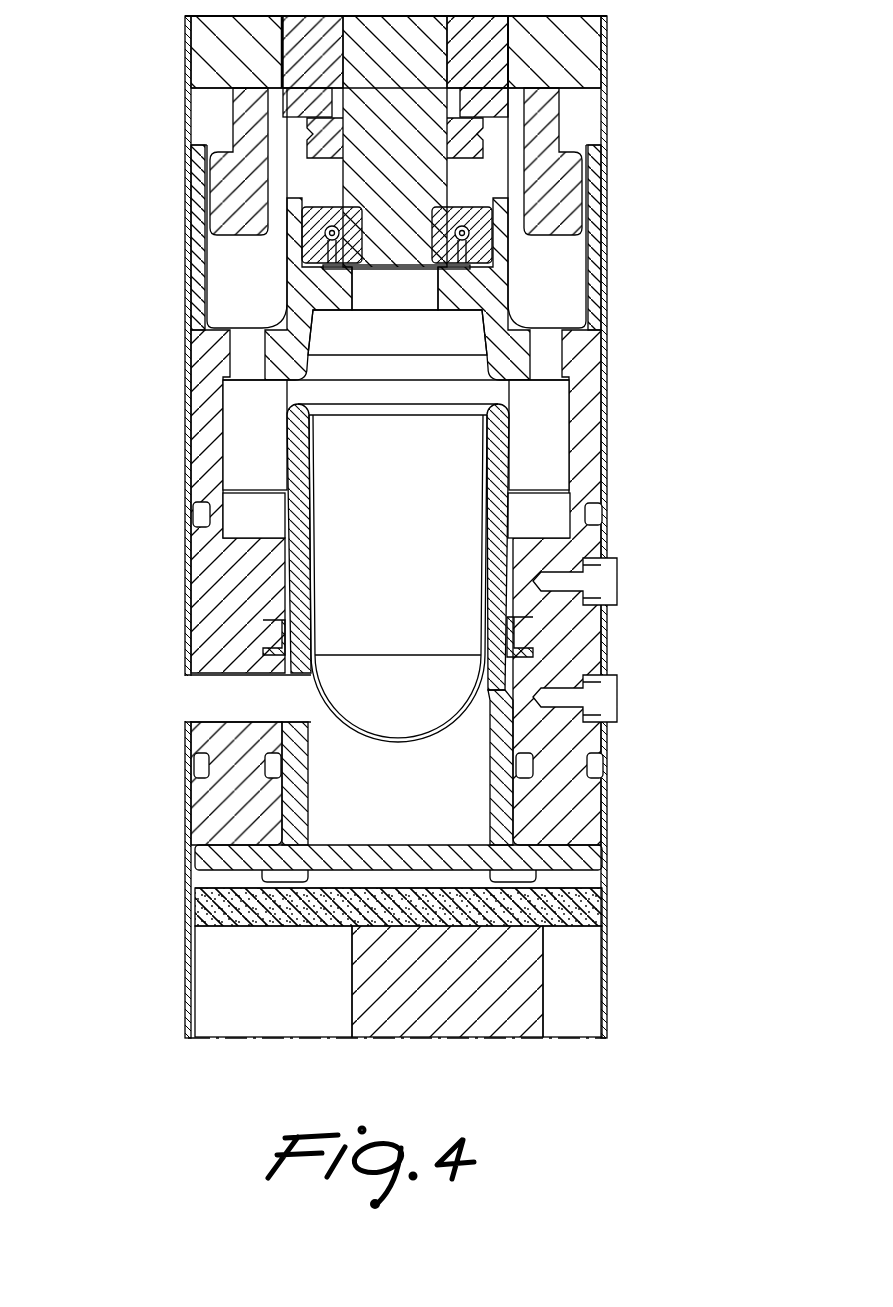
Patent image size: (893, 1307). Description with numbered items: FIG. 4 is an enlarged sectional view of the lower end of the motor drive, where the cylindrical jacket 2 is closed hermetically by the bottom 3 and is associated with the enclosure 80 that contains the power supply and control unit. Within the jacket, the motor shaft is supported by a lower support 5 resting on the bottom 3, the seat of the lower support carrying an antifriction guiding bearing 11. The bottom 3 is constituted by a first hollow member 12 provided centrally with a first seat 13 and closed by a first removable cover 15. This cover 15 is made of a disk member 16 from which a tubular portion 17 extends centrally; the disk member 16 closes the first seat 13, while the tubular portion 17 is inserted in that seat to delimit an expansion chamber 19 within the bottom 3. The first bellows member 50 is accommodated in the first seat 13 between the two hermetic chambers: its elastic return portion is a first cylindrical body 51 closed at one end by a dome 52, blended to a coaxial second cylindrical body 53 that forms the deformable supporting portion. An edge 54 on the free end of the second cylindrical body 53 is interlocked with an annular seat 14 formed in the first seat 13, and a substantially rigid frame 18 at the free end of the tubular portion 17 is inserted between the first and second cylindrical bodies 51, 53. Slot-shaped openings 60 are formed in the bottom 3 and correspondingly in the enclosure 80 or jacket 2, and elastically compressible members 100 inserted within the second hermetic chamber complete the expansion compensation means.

The jacket 2 is at (607, 133).
The bottom 3 is at (236, 397).
The lower support 5 is at (492, 290).
The antifriction guiding bearing 11 is at (302, 213).
The first hollow member 12 is at (210, 812).
The first seat 13 is at (517, 757).
The annular seat 14 is at (530, 630).
The first removable cover 15 is at (224, 884).
The disk member 16 is at (360, 860).
The tubular portion 17 is at (295, 807).
The rigid frame 18 is at (300, 448).
The expansion chamber 19 is at (410, 813).
The first bellows member 50 is at (442, 764).
The first cylindrical body 51 is at (313, 535).
The dome 52 is at (395, 737).
The second cylindrical body 53 is at (510, 470).
The edge 54 is at (265, 635).
The openings 60 is at (208, 698).
The enclosure 80 is at (603, 998).
The elastically compressible members 100 is at (590, 907).